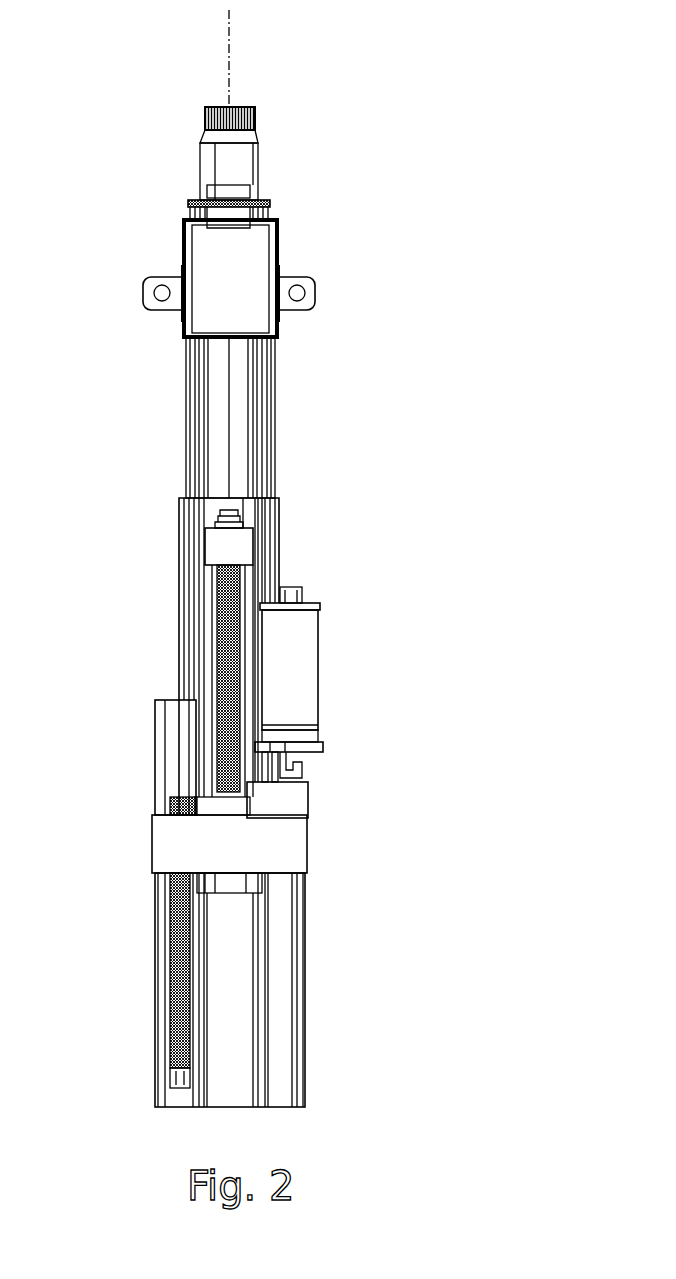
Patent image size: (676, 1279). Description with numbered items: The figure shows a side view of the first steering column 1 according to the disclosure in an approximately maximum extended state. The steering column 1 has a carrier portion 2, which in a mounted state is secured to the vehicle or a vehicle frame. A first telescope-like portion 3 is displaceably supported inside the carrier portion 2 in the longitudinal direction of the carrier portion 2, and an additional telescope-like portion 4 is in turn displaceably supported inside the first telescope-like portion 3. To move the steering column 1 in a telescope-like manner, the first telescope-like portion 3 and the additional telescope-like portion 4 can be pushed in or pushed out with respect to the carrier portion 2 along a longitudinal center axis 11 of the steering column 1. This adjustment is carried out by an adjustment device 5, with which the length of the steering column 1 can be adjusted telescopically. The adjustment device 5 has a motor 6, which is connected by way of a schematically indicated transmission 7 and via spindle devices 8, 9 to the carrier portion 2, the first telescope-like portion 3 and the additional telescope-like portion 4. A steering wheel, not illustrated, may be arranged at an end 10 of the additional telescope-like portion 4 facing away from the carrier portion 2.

The steering column 1 is at (471, 333).
The carrier portion 2 is at (306, 1000).
The first telescope-like portion 3 is at (180, 583).
The additional telescope-like portion 4 is at (184, 390).
The adjustment device 5 is at (440, 820).
The motor 6 is at (305, 633).
The transmission 7 is at (311, 842).
The spindle device 8 is at (212, 608).
The spindle device 9 is at (162, 975).
The end of the additional telescope-like portion 10 is at (188, 102).
The longitudinal center axis 11 is at (231, 52).